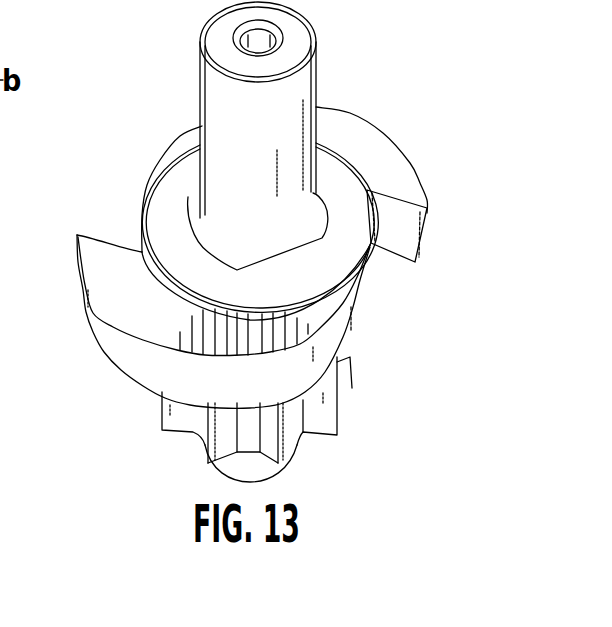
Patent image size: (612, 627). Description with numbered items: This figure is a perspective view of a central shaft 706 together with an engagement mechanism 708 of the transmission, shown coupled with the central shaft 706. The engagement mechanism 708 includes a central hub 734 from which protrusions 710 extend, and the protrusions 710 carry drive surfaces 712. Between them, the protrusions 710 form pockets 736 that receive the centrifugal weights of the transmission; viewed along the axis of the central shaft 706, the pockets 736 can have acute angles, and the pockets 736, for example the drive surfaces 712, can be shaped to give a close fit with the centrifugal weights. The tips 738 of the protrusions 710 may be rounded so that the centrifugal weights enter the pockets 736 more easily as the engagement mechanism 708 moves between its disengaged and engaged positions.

The central shaft 706 is at (250, 225).
The engagement mechanism 708 is at (100, 270).
The protrusions 710 is at (420, 196).
The drive surfaces 712 is at (114, 230).
The central hub 734 is at (330, 183).
The pockets 736 is at (384, 272).
The tips 738 is at (418, 228).